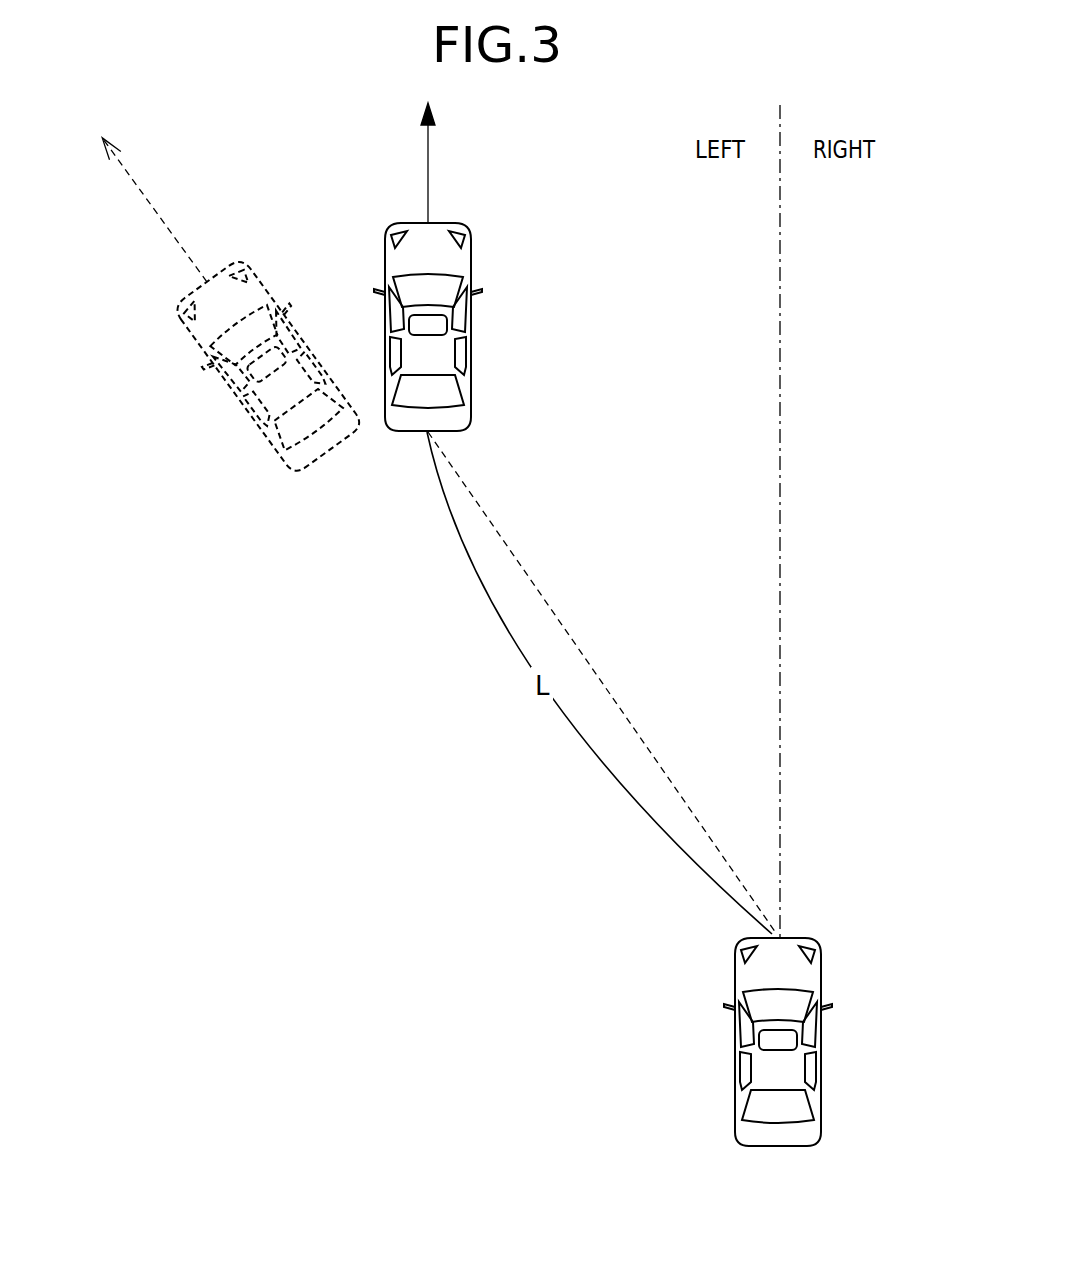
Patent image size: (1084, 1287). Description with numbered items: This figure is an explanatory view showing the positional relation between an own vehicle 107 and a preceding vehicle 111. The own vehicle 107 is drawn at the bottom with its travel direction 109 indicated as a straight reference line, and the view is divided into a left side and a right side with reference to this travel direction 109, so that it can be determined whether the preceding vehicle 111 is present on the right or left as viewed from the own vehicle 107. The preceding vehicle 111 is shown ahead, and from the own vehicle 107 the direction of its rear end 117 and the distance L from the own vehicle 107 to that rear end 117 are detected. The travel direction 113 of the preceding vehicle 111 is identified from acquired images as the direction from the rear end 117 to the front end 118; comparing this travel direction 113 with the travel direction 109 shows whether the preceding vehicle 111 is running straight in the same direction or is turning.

The own vehicle 107 is at (822, 1036).
The travel direction of the own vehicle 109 is at (781, 878).
The preceding vehicle 111 is at (471, 337).
The travel direction of the preceding vehicle 113 is at (428, 165).
The rear end of the preceding vehicle 117 is at (447, 432).
The front end of the preceding vehicle 118 is at (440, 223).